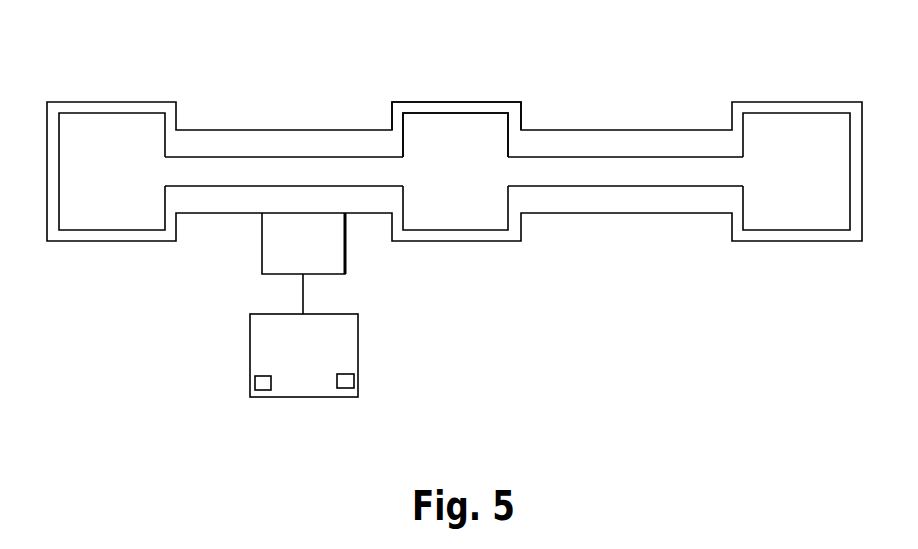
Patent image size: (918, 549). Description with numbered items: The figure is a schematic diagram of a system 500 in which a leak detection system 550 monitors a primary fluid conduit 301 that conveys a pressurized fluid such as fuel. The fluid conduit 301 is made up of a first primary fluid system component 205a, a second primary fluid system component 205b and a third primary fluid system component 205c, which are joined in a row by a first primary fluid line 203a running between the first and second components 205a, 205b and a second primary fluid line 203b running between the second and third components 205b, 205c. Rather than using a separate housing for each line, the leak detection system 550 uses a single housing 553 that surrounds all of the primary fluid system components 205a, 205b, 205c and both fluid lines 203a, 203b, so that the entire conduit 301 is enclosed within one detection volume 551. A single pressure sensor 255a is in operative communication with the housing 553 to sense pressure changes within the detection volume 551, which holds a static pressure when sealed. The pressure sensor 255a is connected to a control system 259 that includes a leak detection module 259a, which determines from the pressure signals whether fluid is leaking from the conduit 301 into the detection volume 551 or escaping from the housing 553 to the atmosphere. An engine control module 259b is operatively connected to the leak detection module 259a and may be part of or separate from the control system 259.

The system 500 is at (63, 30).
The first primary fluid system component 205a is at (120, 113).
The second primary fluid system component 205b is at (451, 113).
The third primary fluid system component 205c is at (800, 113).
The first primary fluid line 203a is at (250, 173).
The second primary fluid line 203b is at (598, 170).
The detection volume 551 is at (428, 108).
The single housing 553 is at (508, 102).
The fluid conduit 301 is at (182, 187).
The pressure sensor 255a is at (346, 250).
The leak detection system 550 is at (214, 302).
The control system 259 is at (310, 397).
The leak detection module 259a is at (350, 387).
The engine control module 259b is at (255, 387).